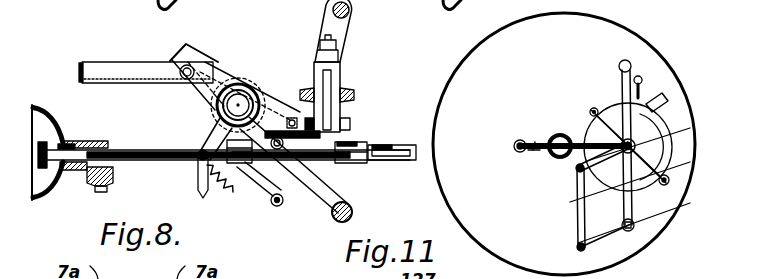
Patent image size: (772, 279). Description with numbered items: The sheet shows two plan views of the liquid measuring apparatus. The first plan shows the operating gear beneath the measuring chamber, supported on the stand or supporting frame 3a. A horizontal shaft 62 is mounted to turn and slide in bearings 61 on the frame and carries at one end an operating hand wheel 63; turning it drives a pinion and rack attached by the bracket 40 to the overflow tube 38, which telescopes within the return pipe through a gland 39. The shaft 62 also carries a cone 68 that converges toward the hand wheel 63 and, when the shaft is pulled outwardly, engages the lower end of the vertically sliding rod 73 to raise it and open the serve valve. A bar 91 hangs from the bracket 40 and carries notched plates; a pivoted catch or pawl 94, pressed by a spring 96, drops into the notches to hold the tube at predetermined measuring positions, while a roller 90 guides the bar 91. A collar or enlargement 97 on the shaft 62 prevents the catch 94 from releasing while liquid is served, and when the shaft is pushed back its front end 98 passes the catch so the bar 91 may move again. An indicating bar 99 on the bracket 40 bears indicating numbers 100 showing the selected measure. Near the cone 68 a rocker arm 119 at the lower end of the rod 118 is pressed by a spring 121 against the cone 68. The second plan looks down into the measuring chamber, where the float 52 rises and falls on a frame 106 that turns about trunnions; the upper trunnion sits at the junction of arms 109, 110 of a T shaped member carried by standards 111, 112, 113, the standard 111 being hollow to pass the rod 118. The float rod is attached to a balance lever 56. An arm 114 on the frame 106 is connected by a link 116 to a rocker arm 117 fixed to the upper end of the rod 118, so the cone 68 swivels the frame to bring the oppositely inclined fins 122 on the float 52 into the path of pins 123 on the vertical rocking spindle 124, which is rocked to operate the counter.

In FIG. 8, the stand or supporting frame 3a is at (350, 13).
In FIG. 8, the overflow tube 38 is at (240, 86).
In FIG. 11, the overflow tube 38 is at (558, 134).
In FIG. 8, the gland 39 is at (213, 110).
In FIG. 8, the bracket 40 is at (266, 98).
In FIG. 11, the float 52 is at (612, 98).
In FIG. 11, the balance lever 56 is at (534, 142).
In FIG. 8, the bearings 61 is at (113, 170).
In FIG. 8, the horizontal shaft 62 is at (146, 150).
In FIG. 8, the hand wheel 63 is at (55, 120).
In FIG. 8, the cone 68 is at (222, 195).
In FIG. 8, the vertically sliding rod 73 is at (205, 148).
In FIG. 8, the roller 90 is at (332, 88).
In FIG. 8, the bar 91 is at (292, 118).
In FIG. 8, the catch or pawl 94 is at (337, 133).
In FIG. 8, the spring 96 is at (340, 166).
In FIG. 8, the collar or enlargement 97 is at (372, 165).
In FIG. 8, the front end of collar 98 is at (362, 132).
In FIG. 8, the indicating bar 99 is at (112, 76).
In FIG. 8, the indicating numbers 100 is at (82, 68).
In FIG. 11, the frame 106 is at (682, 163).
In FIG. 11, the arm of T shaped member 109 is at (533, 150).
In FIG. 11, the arm of T shaped member 110 is at (672, 132).
In FIG. 11, the standard 111 is at (678, 204).
In FIG. 11, the standard 112 is at (513, 143).
In FIG. 11, the standard 113 is at (628, 58).
In FIG. 11, the arm 114 is at (578, 196).
In FIG. 11, the link 116 is at (576, 234).
In FIG. 11, the rocker arm 117 is at (630, 240).
In FIG. 8, the rod 118 is at (282, 203).
In FIG. 11, the rod 118 is at (640, 226).
In FIG. 8, the rocker arm 119 is at (242, 183).
In FIG. 8, the spring 121 is at (207, 175).
In FIG. 11, the fins or projections 122 is at (666, 100).
In FIG. 11, the pins 123 is at (645, 86).
In FIG. 11, the vertical rocking spindle 124 is at (642, 76).